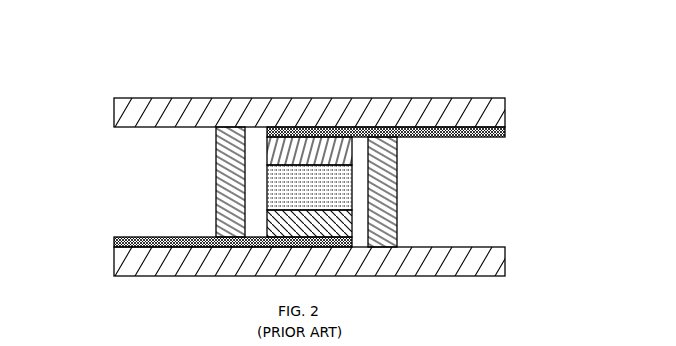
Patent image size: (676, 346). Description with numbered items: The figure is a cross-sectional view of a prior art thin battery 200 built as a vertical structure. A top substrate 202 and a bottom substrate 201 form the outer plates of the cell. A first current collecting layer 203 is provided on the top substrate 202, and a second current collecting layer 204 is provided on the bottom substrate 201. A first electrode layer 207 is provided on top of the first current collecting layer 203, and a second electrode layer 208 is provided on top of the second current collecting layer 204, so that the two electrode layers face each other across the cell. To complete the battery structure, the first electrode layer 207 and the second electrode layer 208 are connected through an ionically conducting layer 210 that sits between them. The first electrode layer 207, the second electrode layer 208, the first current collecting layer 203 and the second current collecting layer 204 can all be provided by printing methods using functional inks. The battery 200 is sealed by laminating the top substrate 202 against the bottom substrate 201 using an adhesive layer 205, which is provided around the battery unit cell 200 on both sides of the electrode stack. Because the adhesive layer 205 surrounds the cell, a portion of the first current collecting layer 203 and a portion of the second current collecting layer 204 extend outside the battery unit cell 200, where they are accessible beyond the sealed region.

The battery 200 is at (172, 62).
The bottom substrate 201 is at (500, 265).
The top substrate 202 is at (498, 113).
The first current collecting layer 203 is at (503, 131).
The second current collecting layer 204 is at (118, 241).
The adhesive layer 205 is at (228, 180).
The first electrode layer 207 is at (325, 153).
The second electrode layer 208 is at (325, 224).
The ionically conducting layer 210 is at (325, 190).